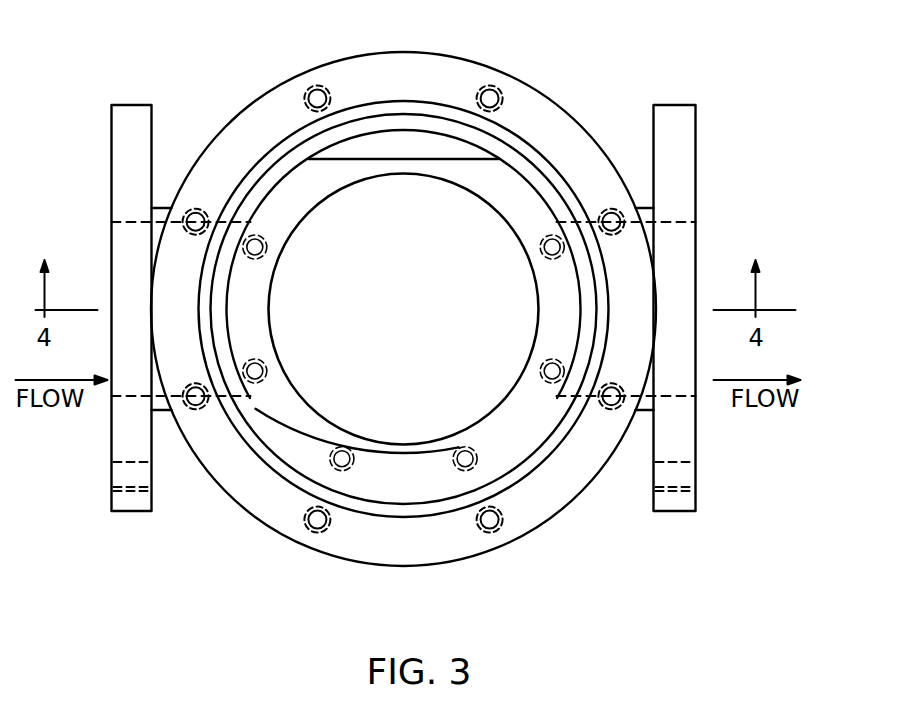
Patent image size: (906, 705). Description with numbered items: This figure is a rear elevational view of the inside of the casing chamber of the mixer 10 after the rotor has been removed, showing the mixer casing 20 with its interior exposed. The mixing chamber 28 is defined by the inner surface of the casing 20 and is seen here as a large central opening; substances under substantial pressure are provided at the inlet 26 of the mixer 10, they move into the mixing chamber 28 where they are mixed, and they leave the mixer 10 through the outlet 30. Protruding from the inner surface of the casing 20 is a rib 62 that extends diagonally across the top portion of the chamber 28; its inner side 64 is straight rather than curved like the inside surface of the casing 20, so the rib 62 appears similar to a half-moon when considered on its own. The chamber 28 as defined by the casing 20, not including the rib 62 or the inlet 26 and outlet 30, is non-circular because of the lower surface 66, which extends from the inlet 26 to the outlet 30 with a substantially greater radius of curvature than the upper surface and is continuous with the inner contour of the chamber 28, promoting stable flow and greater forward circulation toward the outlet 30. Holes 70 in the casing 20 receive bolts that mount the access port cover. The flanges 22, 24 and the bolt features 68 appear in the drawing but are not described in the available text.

The mixer 10 is at (397, 313).
The mixer casing 20 is at (250, 488).
The upstream flange 22 is at (113, 121).
The downstream flange 24 is at (681, 148).
The inlet 26 is at (133, 280).
The mixing chamber 28 is at (445, 220).
The outlet 30 is at (625, 337).
The rib 62 is at (383, 137).
The inner side of rib 64 is at (328, 167).
The lower surface 66 is at (440, 452).
The outer bolt 68 is at (318, 533).
The hole 70 is at (255, 233).